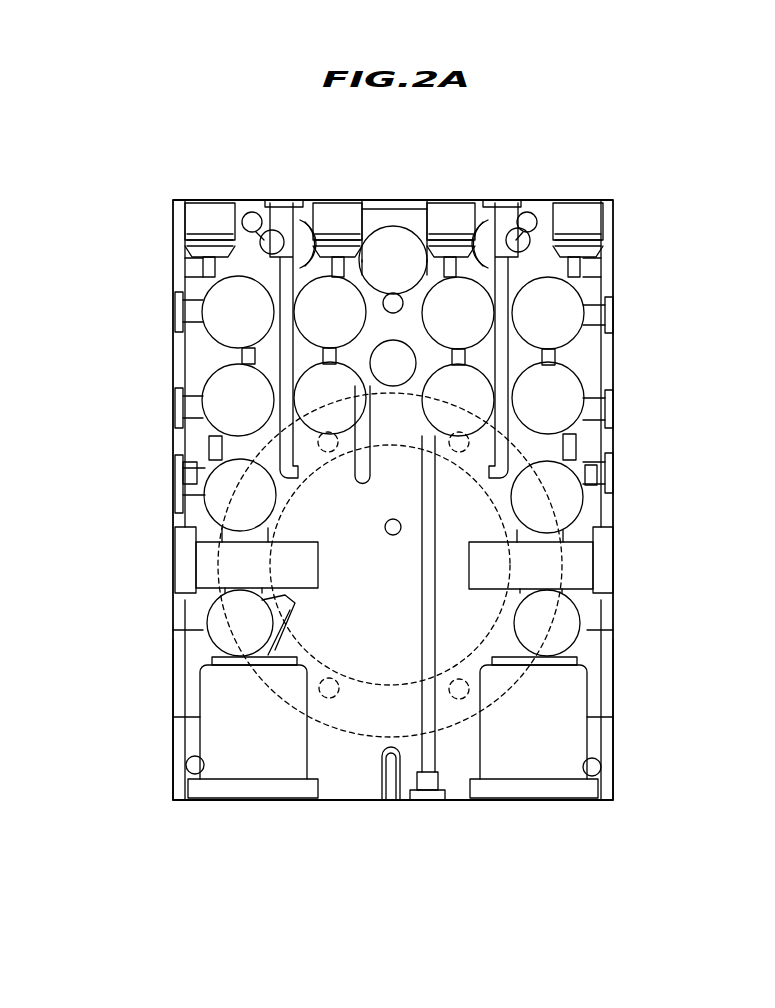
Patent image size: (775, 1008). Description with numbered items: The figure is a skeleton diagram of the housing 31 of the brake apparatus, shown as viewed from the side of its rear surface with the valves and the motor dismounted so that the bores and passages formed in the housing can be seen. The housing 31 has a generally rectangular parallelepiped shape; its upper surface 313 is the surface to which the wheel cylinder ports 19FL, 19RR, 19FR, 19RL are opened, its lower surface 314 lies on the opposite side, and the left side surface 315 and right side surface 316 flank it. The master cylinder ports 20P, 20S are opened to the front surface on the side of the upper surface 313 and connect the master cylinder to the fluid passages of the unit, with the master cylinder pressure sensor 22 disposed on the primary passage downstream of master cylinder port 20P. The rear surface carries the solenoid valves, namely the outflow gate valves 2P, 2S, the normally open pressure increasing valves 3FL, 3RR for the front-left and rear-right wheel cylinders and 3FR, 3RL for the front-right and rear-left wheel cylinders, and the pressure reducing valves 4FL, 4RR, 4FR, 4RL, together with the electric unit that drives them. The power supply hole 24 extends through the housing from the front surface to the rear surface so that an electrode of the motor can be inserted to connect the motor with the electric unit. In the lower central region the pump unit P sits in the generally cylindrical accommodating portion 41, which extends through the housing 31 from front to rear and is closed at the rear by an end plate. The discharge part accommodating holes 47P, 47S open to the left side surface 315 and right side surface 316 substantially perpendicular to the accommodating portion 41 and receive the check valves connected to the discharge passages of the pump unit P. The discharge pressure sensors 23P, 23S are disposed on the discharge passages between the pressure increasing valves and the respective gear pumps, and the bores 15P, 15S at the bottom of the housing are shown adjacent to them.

The housing 31 is at (372, 200).
The upper surface 313 is at (391, 200).
The wheel cylinder port 19RR is at (205, 200).
The wheel cylinder port 19FL is at (326, 200).
The wheel cylinder port 19FR is at (462, 200).
The wheel cylinder port 19RL is at (574, 200).
The master cylinder port 20P is at (270, 240).
The master cylinder port 20S is at (518, 233).
The master cylinder pressure sensor 22 is at (402, 225).
The power supply hole 24 is at (393, 388).
The pressure increasing valve 3RR is at (203, 300).
The pressure increasing valve 3FL is at (310, 280).
The pressure increasing valve 3FR is at (482, 285).
The pressure increasing valve 3RL is at (582, 292).
The pressure reducing valve 4RR is at (204, 385).
The pressure reducing valve 4FL is at (310, 370).
The pressure reducing valve 4FR is at (485, 370).
The pressure reducing valve 4RL is at (585, 370).
The outflow gate valve 2P is at (205, 470).
The outflow gate valve 2S is at (613, 470).
The discharge part accommodating hole 47P is at (173, 545).
The discharge part accommodating hole 47S is at (613, 548).
The discharge pressure sensor 23P is at (207, 632).
The discharge pressure sensor 23S is at (580, 632).
The pump P 15P is at (200, 717).
The pump S 15S is at (587, 717).
The right side surface 316 is at (173, 672).
The left side surface 315 is at (613, 672).
The accommodating portion 41 is at (468, 655).
The lower surface 314 is at (372, 800).
The pump unit P is at (385, 688).